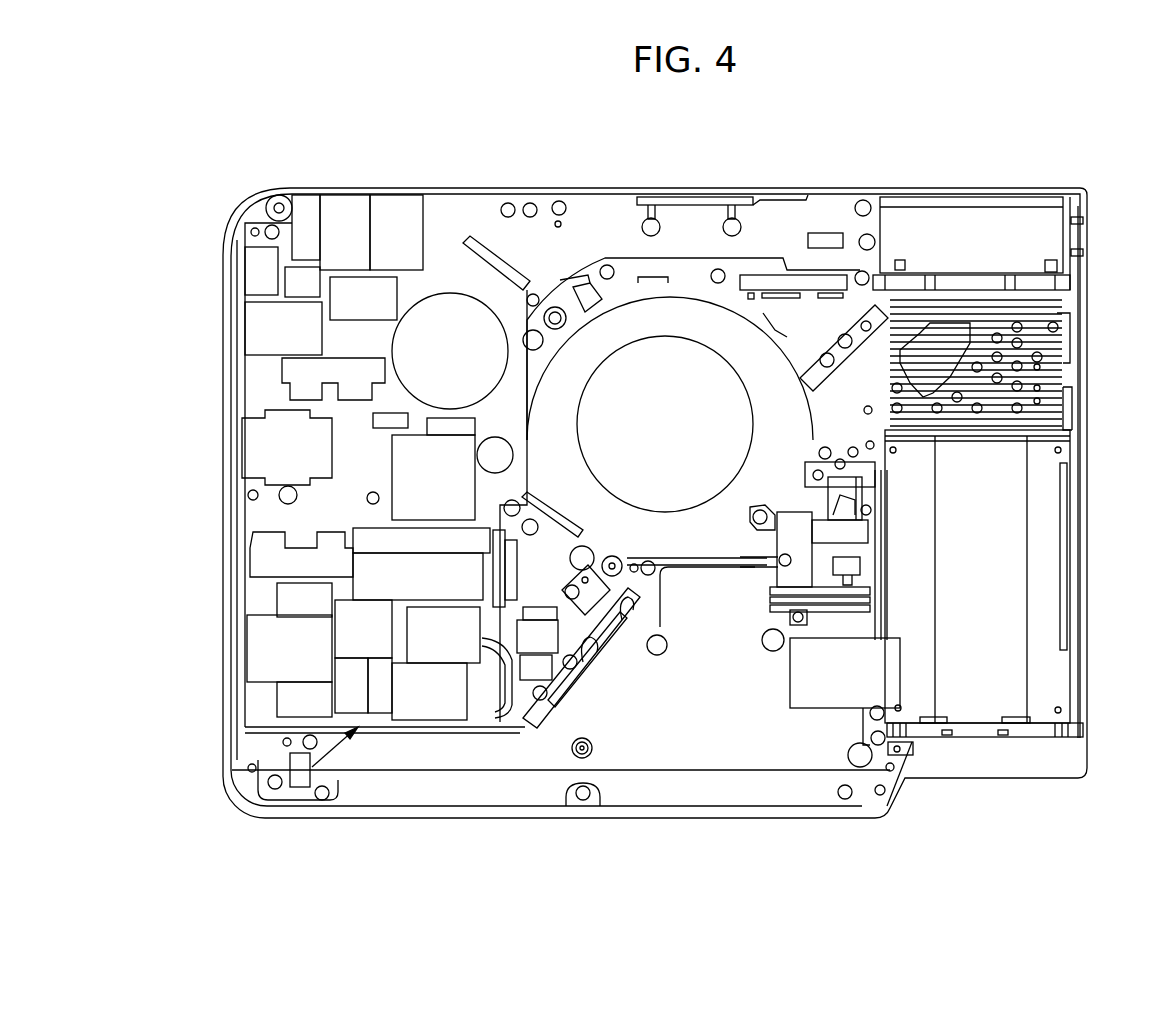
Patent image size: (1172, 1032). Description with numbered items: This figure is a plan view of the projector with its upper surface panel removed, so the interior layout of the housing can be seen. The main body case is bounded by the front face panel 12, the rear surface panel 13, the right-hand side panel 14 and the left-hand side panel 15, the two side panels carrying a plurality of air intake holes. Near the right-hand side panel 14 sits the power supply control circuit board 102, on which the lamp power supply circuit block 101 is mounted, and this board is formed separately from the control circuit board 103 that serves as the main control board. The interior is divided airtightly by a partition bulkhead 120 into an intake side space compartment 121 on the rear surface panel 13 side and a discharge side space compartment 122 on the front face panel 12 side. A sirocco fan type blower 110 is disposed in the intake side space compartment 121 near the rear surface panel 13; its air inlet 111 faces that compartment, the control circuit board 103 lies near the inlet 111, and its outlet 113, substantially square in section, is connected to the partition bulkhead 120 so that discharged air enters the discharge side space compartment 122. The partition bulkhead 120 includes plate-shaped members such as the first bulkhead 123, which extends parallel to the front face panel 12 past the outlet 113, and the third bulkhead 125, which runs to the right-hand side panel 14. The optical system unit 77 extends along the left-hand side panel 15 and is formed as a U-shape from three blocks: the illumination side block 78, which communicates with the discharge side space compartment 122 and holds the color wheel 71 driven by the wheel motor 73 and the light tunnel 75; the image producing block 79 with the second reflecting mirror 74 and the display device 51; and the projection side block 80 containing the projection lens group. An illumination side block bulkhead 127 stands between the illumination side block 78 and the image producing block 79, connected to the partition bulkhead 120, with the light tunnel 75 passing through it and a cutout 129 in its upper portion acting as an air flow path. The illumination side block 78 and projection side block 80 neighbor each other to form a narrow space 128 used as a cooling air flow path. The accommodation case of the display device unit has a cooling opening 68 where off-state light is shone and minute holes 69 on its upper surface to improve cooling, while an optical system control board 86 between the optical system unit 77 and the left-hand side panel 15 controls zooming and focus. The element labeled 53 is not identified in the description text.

The front face panel 12 is at (627, 820).
The rear surface panel 13 is at (449, 186).
The right-hand side panel 14 is at (229, 540).
The left-hand side panel 15 is at (1088, 320).
The display device 51 is at (972, 285).
The cover 53 is at (898, 228).
The cooling opening 68 is at (946, 348).
The minute holes 69 is at (1062, 350).
The color wheel 71 is at (822, 600).
The wheel motor 73 is at (832, 580).
The second reflecting mirror 74 is at (837, 348).
The light tunnel 75 is at (850, 509).
The optical system unit 77 is at (1070, 416).
The illumination side block 78 is at (848, 618).
The image producing block 79 is at (1009, 322).
The projection side block 80 is at (1036, 622).
The optical system control board 86 is at (1078, 455).
The lamp power supply circuit block 101 is at (262, 330).
The power supply control circuit board 102 is at (255, 597).
The control circuit board 103 is at (545, 245).
The blower 110 is at (630, 315).
The air inlet 111 is at (672, 365).
The outlet 113 is at (715, 567).
The partition bulkhead 120 is at (346, 730).
The intake side space compartment 121 is at (596, 252).
The discharge side space compartment 122 is at (468, 734).
The first bulkhead 123 is at (797, 562).
The third bulkhead 125 is at (408, 728).
The illumination side block bulkhead 127 is at (885, 527).
The narrow space 128 is at (885, 498).
The cutout 129 is at (885, 483).